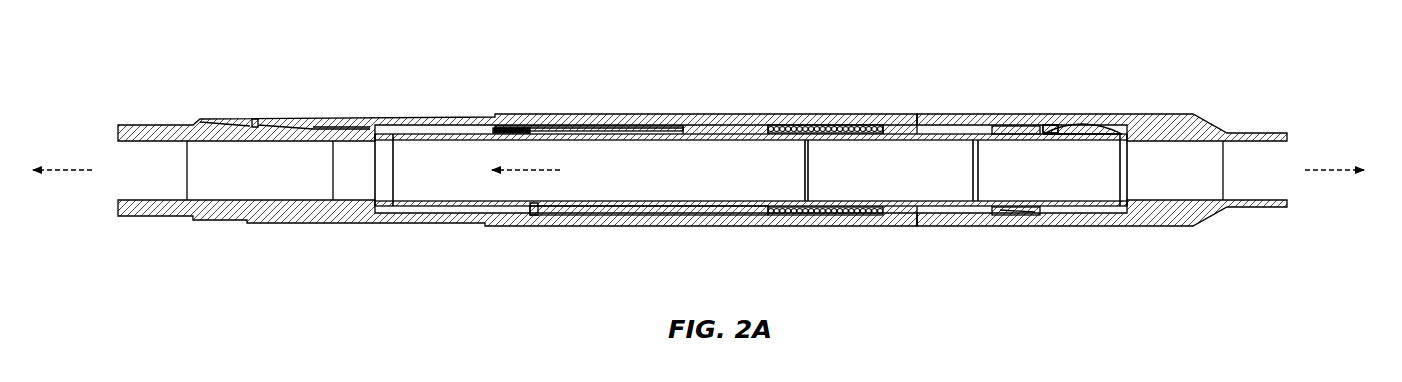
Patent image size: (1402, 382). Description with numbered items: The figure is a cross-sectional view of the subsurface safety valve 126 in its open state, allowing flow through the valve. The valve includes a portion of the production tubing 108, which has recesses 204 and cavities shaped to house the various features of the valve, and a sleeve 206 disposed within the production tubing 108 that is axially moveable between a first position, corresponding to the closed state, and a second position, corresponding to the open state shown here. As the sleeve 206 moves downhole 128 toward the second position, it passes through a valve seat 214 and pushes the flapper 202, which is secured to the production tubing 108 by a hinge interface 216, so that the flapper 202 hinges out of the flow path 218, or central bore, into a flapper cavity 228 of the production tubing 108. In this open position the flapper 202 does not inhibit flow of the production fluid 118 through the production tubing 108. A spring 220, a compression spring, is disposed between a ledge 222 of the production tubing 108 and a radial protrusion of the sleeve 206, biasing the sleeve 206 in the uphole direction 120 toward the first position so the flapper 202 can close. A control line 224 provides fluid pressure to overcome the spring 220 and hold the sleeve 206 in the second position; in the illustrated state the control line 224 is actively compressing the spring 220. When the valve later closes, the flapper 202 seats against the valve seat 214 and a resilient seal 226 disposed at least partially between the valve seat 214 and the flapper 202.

The production tubing 108 is at (313, 214).
The production fluid 118 is at (535, 172).
The uphole direction 120 is at (57, 170).
The subsurface safety valve 126 is at (187, 53).
The downhole direction 128 is at (1338, 170).
The flapper 202 is at (1085, 124).
The recesses 204 is at (683, 127).
The sleeve 206 is at (697, 208).
The valve seat 214 is at (1007, 127).
The hinge interface 216 is at (1055, 129).
The flow path 218 is at (517, 172).
The spring 220 is at (820, 126).
The ledge 222 is at (882, 209).
The control line 224 is at (313, 127).
The resilient seal 226 is at (1035, 210).
The flapper cavity 228 is at (1115, 128).